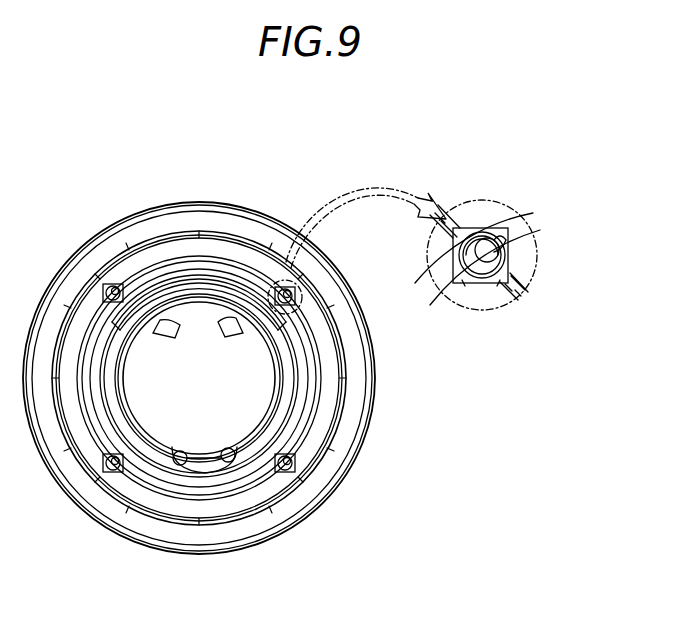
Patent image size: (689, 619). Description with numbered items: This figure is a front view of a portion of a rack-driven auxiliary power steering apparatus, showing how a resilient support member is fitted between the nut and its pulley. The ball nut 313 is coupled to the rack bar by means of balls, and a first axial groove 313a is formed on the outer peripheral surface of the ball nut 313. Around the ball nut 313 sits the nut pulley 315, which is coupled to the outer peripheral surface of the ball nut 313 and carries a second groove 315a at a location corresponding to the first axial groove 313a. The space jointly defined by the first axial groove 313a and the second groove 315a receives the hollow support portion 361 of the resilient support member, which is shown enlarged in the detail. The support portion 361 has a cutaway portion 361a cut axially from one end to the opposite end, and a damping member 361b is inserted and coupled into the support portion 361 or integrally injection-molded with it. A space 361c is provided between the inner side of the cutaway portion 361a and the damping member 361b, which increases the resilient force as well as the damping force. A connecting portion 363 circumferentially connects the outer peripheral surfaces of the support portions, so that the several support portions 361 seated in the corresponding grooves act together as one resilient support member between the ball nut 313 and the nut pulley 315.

The ball nut 313 is at (225, 480).
The first axial groove 313a is at (467, 287).
The nut pulley 315 is at (135, 493).
The second groove 315a is at (510, 243).
The support portion 361 is at (480, 237).
The cutaway portion 361a is at (500, 237).
The damping member 361b is at (470, 258).
The space 361c is at (483, 247).
The connecting portion 363 is at (527, 283).